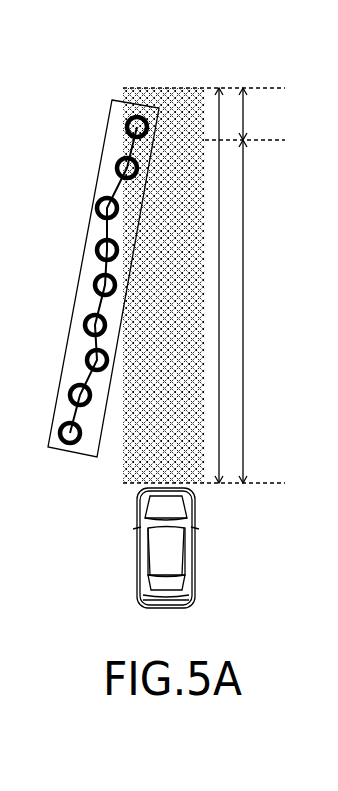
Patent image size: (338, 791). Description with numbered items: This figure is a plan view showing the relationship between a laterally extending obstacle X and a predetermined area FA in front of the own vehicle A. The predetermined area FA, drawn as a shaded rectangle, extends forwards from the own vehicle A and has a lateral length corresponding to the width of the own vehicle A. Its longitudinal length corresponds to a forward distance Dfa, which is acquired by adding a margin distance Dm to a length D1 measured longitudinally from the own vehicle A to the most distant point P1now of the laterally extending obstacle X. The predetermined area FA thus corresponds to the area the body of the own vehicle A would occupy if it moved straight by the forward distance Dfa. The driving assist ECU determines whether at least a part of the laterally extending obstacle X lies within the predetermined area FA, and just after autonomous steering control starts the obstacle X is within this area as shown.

The predetermined area FA is at (168, 88).
The laterally extending obstacle X is at (86, 253).
The most distant point P1now is at (126, 128).
The margin distance Dm is at (247, 112).
The length D1 is at (245, 279).
The forward distance Dfa is at (220, 335).
The own vehicle A is at (195, 555).